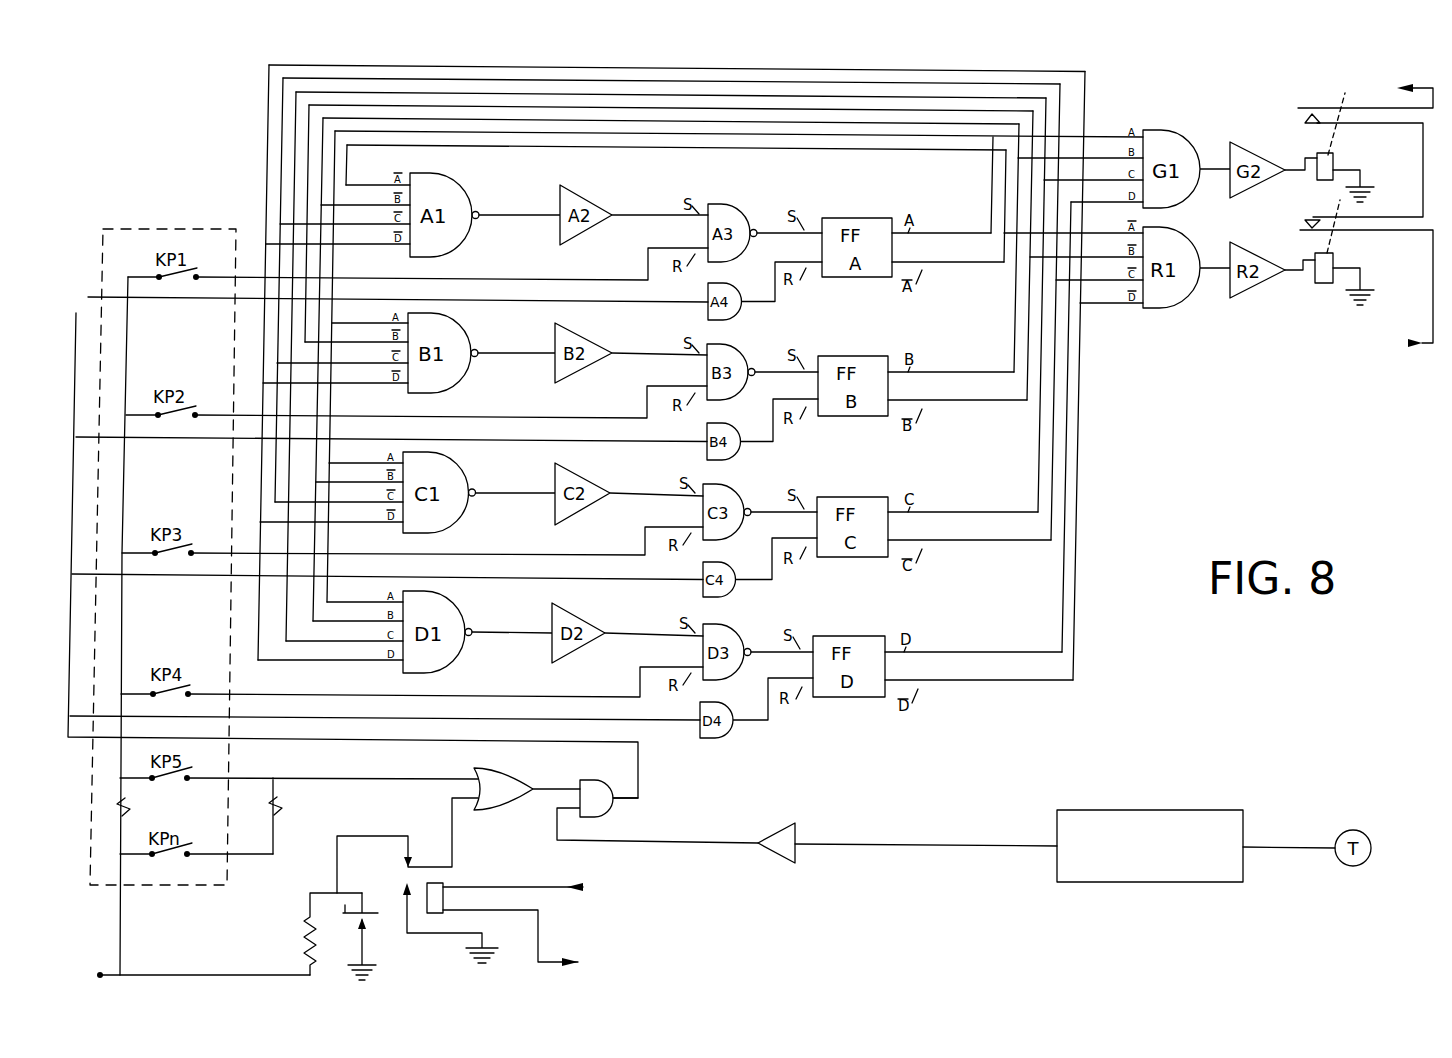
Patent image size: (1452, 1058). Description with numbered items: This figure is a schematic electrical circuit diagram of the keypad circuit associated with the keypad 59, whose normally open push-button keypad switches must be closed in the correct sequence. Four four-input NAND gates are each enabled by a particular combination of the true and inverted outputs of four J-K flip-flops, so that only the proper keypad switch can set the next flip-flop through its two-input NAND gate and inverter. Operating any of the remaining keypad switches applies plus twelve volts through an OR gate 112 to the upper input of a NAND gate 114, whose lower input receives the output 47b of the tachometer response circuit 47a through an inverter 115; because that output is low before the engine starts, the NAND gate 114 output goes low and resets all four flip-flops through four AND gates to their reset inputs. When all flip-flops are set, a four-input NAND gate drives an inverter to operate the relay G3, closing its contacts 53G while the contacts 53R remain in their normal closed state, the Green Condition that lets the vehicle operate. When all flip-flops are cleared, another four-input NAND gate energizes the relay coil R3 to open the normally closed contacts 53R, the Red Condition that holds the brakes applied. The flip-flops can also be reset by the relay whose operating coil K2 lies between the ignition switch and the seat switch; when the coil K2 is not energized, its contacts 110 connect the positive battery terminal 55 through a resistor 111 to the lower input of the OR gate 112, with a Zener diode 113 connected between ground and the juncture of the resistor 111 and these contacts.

The keypad 59 is at (190, 226).
The positive battery terminal 55 is at (100, 970).
The relay contacts 110 is at (402, 865).
The resistor 111 is at (303, 945).
The OR gate 112 is at (512, 770).
The Zener diode 113 is at (364, 950).
The NAND gate 114 is at (608, 811).
The inverter 115 is at (771, 832).
The tachometer response circuit 47a is at (1175, 810).
The output of the tachometer response circuit 47b is at (933, 843).
The relay contacts 53G is at (1303, 119).
The relay contacts 53R is at (1303, 224).
The relay G3 is at (1333, 160).
The relay coil R3 is at (1335, 263).
The relay coil K2 is at (437, 913).